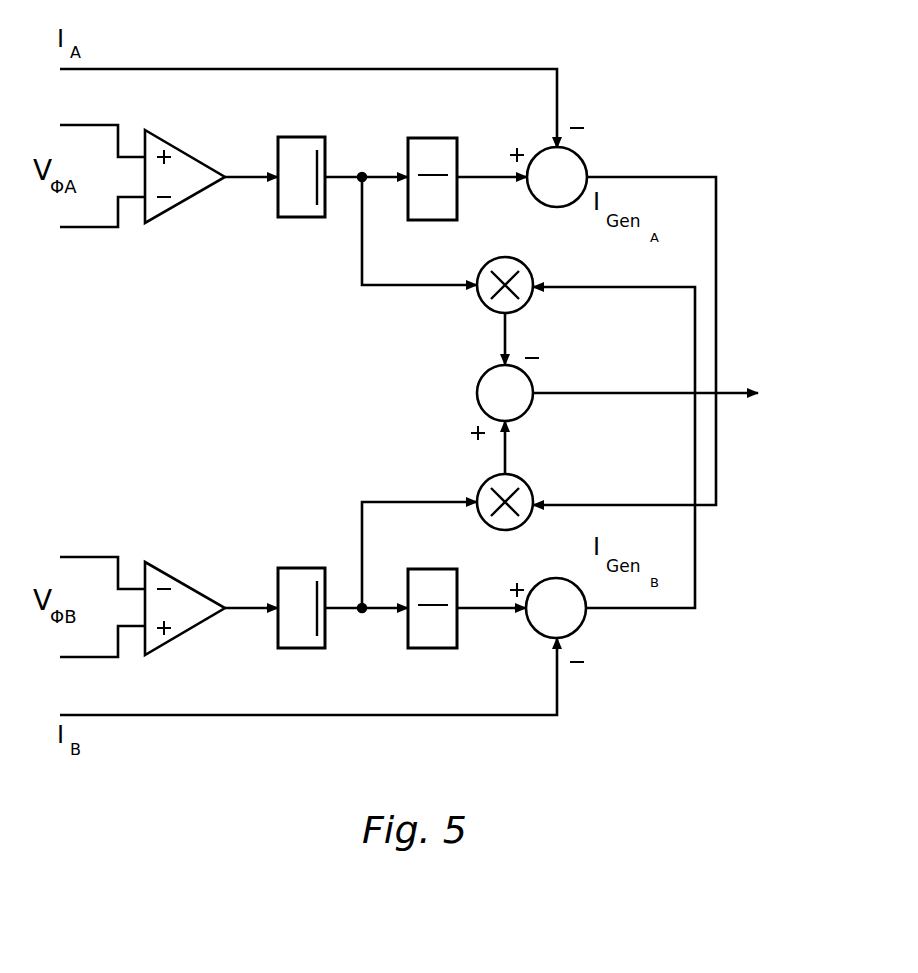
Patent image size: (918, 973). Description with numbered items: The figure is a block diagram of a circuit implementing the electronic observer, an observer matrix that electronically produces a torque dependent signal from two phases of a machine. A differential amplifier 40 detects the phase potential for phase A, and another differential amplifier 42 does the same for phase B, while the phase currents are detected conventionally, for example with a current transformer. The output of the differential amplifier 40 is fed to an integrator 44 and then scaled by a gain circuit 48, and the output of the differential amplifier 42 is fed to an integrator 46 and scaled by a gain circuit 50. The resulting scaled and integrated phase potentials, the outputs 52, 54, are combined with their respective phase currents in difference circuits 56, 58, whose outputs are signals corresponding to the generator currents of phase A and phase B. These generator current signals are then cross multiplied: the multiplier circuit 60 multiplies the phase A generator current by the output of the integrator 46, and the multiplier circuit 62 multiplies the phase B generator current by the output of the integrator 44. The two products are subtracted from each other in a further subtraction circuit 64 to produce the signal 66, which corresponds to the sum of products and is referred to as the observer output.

The differential amplifier 40 is at (190, 158).
The differential amplifier 42 is at (188, 635).
The integrator 44 is at (311, 217).
The integrator 46 is at (300, 568).
The gain circuit 48 is at (432, 138).
The gain circuit 50 is at (436, 648).
The output 52 is at (487, 177).
The output 54 is at (487, 608).
The difference circuit 56 is at (593, 160).
The difference circuit 58 is at (588, 634).
The multiplier circuit 60 is at (475, 307).
The multiplier circuit 62 is at (470, 480).
The subtraction circuit 64 is at (530, 418).
The signal 66 is at (663, 396).